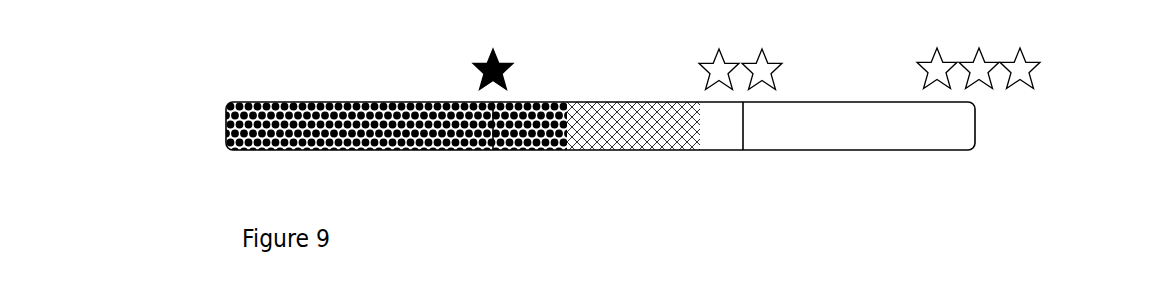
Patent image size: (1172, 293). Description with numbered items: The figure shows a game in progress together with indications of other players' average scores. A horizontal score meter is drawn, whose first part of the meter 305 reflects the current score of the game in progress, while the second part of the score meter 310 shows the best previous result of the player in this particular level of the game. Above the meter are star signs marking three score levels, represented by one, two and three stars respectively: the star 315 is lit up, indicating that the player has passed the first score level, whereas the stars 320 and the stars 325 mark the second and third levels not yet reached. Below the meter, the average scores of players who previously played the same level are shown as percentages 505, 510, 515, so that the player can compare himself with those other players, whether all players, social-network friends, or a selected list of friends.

The first part of the meter 305 is at (365, 150).
The second part of the score meter 310 is at (632, 100).
The star 315 is at (475, 68).
The stars 320 is at (780, 67).
The stars 325 is at (1037, 66).
The percentage 505 is at (540, 235).
The percentage 510 is at (758, 237).
The percentage 515 is at (998, 237).